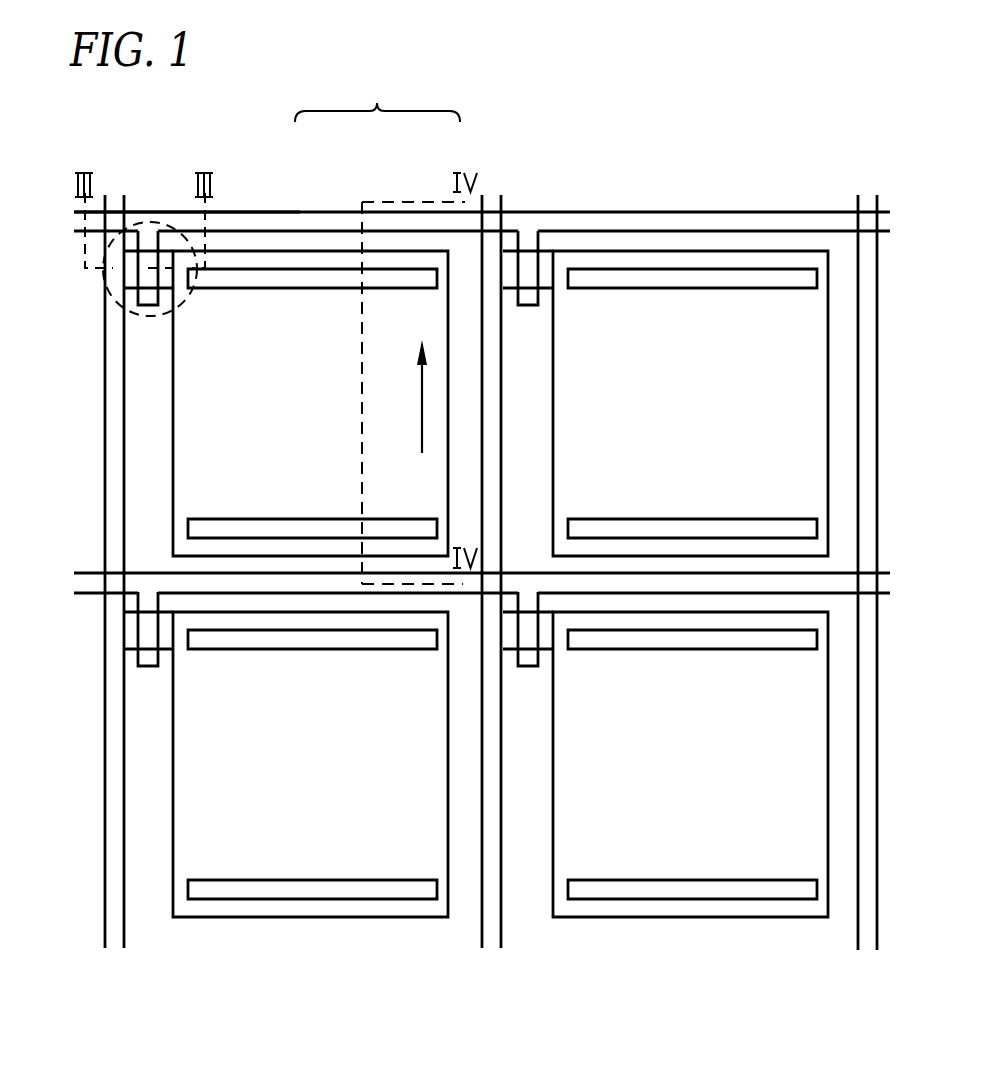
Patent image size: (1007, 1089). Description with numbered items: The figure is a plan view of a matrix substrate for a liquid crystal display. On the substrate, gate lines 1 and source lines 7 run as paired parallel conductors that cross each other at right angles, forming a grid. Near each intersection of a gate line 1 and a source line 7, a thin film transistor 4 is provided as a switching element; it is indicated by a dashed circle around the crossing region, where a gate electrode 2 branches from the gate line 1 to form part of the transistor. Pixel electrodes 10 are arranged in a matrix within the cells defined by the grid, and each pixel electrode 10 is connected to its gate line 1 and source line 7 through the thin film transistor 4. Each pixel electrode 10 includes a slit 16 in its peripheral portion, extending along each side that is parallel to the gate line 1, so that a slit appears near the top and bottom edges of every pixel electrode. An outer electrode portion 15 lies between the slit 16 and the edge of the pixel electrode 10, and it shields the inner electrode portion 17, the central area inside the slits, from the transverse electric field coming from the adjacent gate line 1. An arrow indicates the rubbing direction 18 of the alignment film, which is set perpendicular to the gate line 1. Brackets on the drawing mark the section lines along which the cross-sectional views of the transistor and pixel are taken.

The gate line 1 is at (281, 222).
The gate electrode 2 is at (150, 240).
The thin film transistor 4 is at (168, 216).
The source line 7 is at (116, 203).
The pixel electrode 10 is at (316, 310).
The outer electrode portion 15 is at (327, 258).
The slit 16 is at (388, 272).
The inner electrode portion 17 is at (423, 300).
The rubbing direction 18 is at (422, 395).